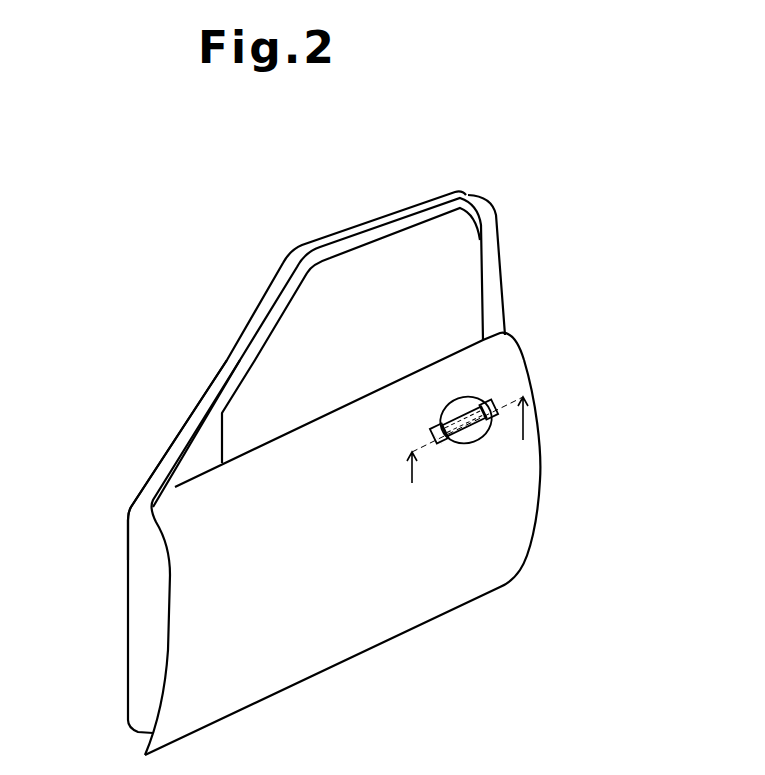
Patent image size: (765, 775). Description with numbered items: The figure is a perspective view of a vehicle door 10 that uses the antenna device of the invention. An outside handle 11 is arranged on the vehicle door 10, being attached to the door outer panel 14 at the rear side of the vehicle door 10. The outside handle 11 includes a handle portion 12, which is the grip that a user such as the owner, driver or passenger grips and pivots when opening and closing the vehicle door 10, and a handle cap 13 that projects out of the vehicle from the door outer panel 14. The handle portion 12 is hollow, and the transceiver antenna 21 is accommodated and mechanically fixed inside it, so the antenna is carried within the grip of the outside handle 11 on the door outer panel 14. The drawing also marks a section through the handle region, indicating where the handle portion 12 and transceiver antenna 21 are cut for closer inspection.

The vehicle door 10 is at (568, 279).
The outside handle 11 is at (496, 450).
The handle portion 12 is at (437, 423).
The handle cap 13 is at (489, 407).
The door outer panel 14 is at (418, 624).
The transceiver antenna 21 is at (438, 453).